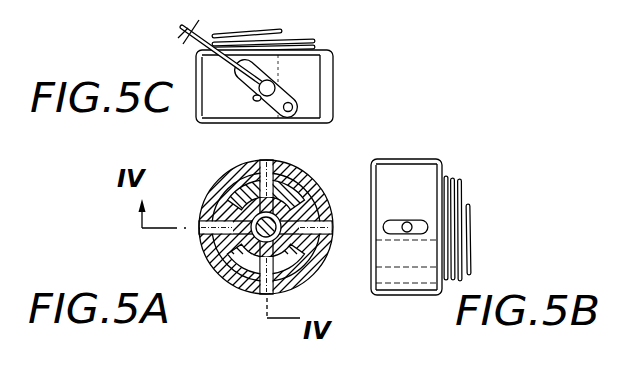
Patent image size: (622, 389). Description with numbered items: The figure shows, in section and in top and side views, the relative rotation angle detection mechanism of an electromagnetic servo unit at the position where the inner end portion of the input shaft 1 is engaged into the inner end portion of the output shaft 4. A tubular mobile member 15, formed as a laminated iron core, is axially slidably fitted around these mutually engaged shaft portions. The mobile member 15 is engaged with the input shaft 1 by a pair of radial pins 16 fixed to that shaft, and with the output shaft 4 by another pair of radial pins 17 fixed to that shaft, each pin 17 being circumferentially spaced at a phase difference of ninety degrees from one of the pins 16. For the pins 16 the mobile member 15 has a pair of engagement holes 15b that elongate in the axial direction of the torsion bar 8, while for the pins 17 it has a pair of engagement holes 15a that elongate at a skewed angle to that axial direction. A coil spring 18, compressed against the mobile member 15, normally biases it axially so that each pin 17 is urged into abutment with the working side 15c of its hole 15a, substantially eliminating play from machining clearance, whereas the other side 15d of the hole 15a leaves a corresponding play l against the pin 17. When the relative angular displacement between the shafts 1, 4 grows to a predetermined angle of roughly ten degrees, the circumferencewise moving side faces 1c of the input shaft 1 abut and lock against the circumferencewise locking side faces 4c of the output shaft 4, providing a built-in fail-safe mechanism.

In FIG. 5A, the input shaft 1 is at (222, 250).
In FIG. 5A, the circumferencewise moving side faces 1c is at (218, 210).
In FIG. 5A, the output shaft 4 is at (222, 273).
In FIG. 5A, the circumferencewise locking side faces 4c is at (232, 196).
In FIG. 5A, the torsion bar 8 is at (322, 270).
In FIG. 5C, the mobile member 15 is at (320, 83).
In FIG. 5B, the mobile member 15 is at (418, 175).
In FIG. 5C, the engagement holes 15a is at (293, 108).
In FIG. 5B, the engagement holes 15b is at (428, 231).
In FIG. 5C, the working side 15c is at (252, 72).
In FIG. 5C, the other side 15d is at (261, 100).
In FIG. 5A, the radial pins 16 is at (201, 227).
In FIG. 5B, the radial pins 16 is at (405, 224).
In FIG. 5C, the radial pins 17 is at (272, 84).
In FIG. 5A, the radial pins 17 is at (268, 161).
In FIG. 5C, the coil spring 18 is at (248, 31).
In FIG. 5B, the coil spring 18 is at (460, 192).
In FIG. 5C, the play l is at (182, 36).